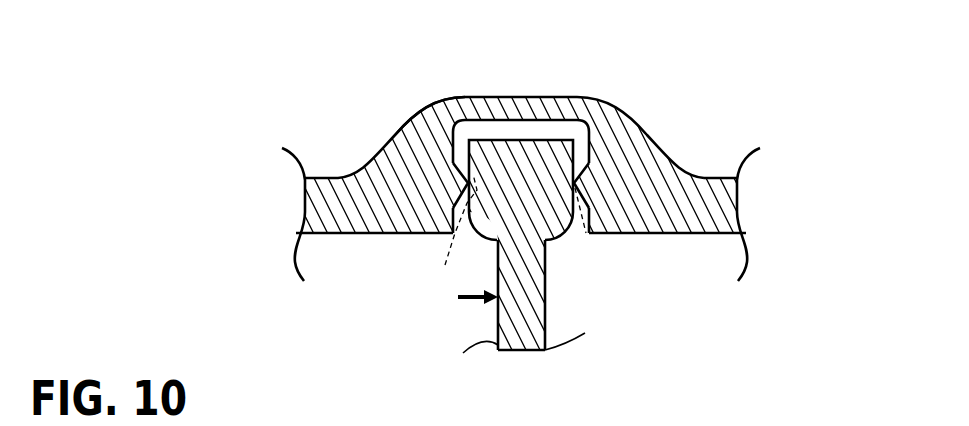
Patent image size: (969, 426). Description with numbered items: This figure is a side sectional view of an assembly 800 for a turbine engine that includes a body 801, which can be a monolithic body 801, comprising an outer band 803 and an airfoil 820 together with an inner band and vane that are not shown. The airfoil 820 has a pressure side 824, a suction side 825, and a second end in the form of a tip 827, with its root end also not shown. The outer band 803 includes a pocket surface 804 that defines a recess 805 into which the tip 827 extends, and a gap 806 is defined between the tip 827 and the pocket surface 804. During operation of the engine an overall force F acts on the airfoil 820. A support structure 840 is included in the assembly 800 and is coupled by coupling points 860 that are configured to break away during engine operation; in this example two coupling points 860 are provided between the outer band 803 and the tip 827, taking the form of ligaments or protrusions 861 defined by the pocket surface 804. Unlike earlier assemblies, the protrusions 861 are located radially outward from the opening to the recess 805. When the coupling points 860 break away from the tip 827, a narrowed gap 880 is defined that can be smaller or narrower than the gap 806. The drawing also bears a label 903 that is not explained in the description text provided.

The assembly 800 is at (733, 58).
The body 801 is at (712, 176).
The outer band 803 is at (643, 158).
The pocket surface 804 is at (474, 128).
The gap 806 is at (522, 128).
The recess 805 is at (470, 245).
The airfoil 820 is at (530, 332).
The pressure side 824 is at (497, 325).
The suction side 825 is at (545, 323).
The tip 827 is at (520, 217).
The support structure 840 is at (467, 183).
The protrusions 861 is at (575, 183).
The coupling point 860 is at (586, 233).
The narrowed gap 880 is at (440, 232).
The mating component 903 is at (655, 419).
The overall force F is at (474, 316).